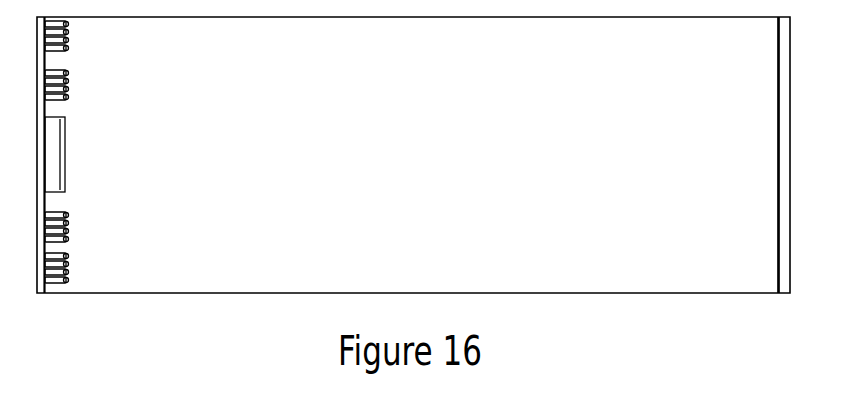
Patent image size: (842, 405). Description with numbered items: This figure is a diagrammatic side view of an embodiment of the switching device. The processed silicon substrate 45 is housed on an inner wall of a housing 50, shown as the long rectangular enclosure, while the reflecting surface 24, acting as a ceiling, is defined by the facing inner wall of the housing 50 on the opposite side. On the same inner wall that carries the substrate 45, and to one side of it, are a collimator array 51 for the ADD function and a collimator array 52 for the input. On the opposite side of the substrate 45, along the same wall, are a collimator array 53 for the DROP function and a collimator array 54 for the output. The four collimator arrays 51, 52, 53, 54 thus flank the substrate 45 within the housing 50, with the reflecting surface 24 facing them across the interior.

The housing 50 is at (502, 81).
The reflecting surface 24 is at (776, 134).
The collimator array for the ADD function 51 is at (73, 46).
The collimator array for the input 52 is at (75, 86).
The processed silicon substrate 45 is at (67, 158).
The collimator array for the output 54 is at (75, 229).
The collimator array for the DROP function 53 is at (75, 268).